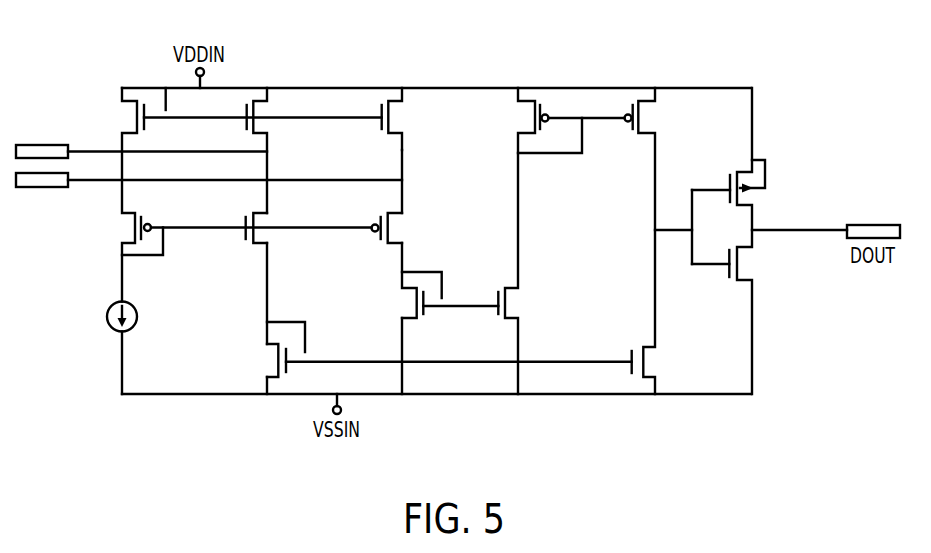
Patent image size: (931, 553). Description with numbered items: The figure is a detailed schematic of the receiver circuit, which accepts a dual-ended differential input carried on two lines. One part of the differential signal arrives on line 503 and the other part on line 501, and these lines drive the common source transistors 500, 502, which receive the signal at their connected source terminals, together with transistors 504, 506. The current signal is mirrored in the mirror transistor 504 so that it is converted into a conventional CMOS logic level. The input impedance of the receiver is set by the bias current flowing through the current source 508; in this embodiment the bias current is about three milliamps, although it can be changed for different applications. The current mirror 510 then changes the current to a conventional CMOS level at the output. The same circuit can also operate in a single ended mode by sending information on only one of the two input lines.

The common source transistor 500 is at (267, 77).
The line 501 is at (62, 188).
The line 503 is at (62, 142).
The common source transistor 502 is at (264, 222).
The mirror transistor 504 is at (403, 118).
The common source transistor 506 is at (398, 228).
The current source 508 is at (88, 318).
The current mirror 510 is at (267, 361).